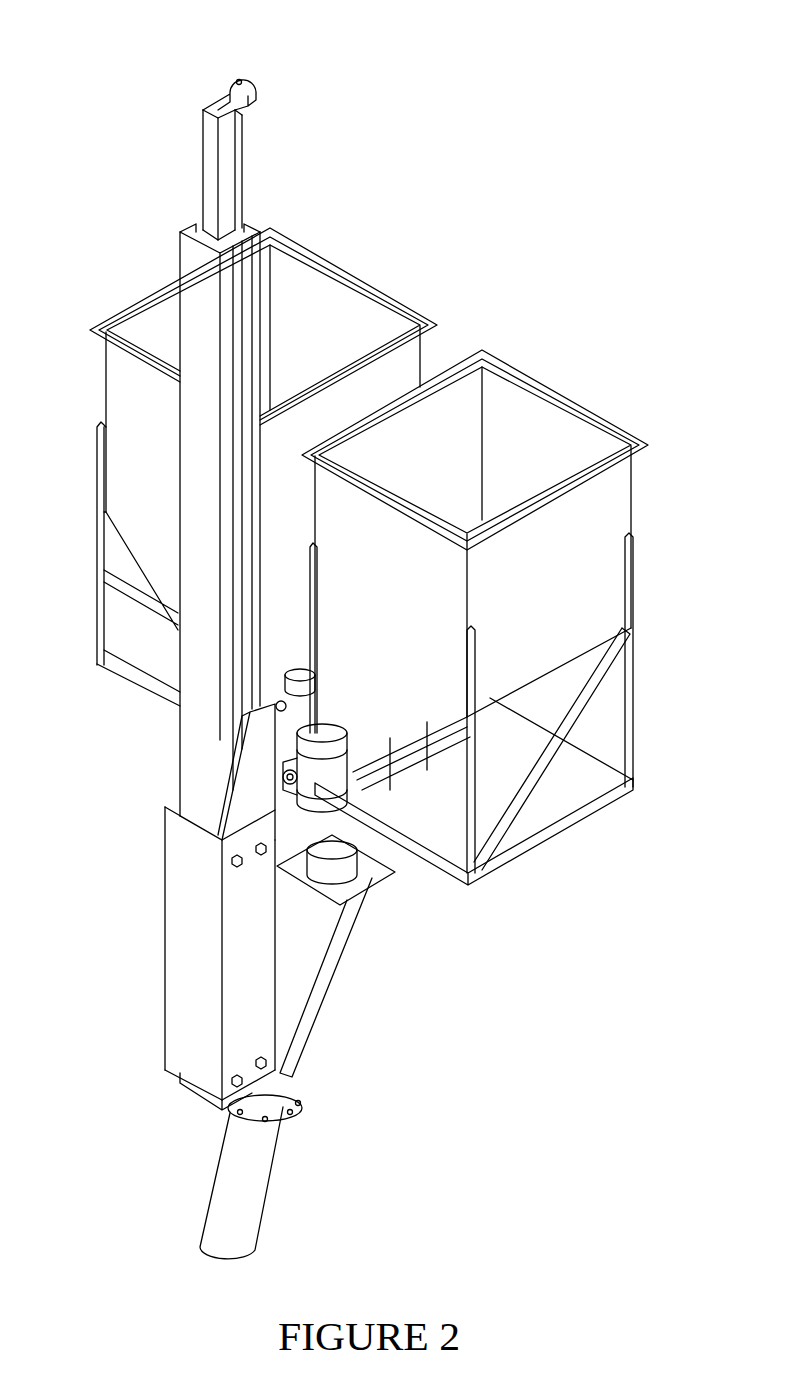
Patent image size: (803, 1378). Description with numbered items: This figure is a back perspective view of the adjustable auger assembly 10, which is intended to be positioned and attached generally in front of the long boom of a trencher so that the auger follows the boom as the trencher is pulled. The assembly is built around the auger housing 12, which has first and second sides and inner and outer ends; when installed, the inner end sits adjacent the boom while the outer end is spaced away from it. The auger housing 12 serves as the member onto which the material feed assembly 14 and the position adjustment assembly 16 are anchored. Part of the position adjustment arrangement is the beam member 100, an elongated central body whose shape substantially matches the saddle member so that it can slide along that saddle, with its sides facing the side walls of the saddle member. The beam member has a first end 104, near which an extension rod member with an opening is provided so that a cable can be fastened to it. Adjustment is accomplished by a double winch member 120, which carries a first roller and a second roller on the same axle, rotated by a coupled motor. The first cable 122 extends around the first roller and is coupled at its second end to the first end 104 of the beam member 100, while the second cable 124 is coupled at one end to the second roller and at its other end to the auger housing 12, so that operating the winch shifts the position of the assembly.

The adjustable auger assembly 10 is at (688, 255).
The auger housing 12 is at (345, 1002).
The material feed assembly 14 is at (683, 586).
The position adjustment assembly 16 is at (168, 631).
The beam member 100 is at (170, 260).
The first end 104 is at (237, 60).
The double winch member 120 is at (293, 697).
The first cable 122 is at (238, 147).
The second cable 124 is at (283, 748).